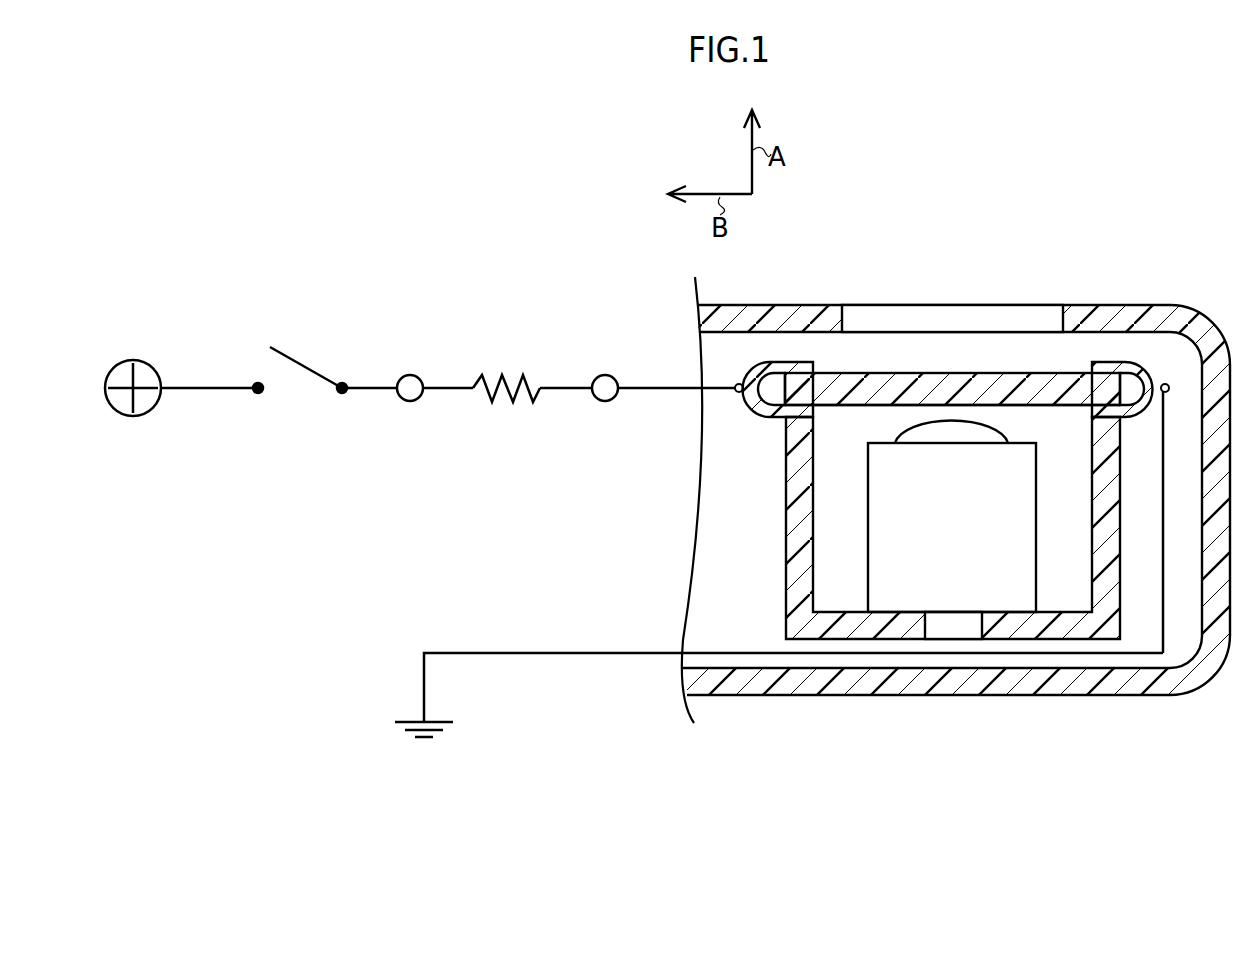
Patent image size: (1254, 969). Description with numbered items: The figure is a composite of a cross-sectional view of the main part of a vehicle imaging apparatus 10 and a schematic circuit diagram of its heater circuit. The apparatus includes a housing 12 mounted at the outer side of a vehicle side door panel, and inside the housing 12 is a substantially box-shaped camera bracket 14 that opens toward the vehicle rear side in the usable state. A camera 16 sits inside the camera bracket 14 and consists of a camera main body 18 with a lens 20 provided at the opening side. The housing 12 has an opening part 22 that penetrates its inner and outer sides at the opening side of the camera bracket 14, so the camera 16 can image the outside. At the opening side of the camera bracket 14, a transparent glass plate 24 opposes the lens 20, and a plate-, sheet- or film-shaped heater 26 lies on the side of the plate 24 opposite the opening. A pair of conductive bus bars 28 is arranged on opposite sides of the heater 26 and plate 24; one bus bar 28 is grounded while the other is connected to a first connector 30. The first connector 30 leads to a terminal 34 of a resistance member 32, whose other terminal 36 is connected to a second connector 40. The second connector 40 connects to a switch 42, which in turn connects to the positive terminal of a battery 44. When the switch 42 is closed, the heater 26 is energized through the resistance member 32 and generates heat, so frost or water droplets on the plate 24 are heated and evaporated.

The vehicle imaging apparatus 10 is at (1176, 194).
The housing 12 is at (1144, 305).
The camera bracket 14 is at (860, 640).
The camera 16 is at (838, 523).
The camera main body 18 is at (1038, 505).
The lens 20 is at (1000, 423).
The opening part 22 is at (1062, 320).
The plate 24 is at (840, 407).
The heater 26 is at (965, 372).
The bus bars 28 is at (795, 362).
The first connector 30 is at (605, 375).
The resistance member 32 is at (526, 365).
The terminal 34 is at (564, 390).
The terminal 36 is at (452, 390).
The second connector 40 is at (410, 375).
The switch 42 is at (319, 324).
The battery 44 is at (166, 333).